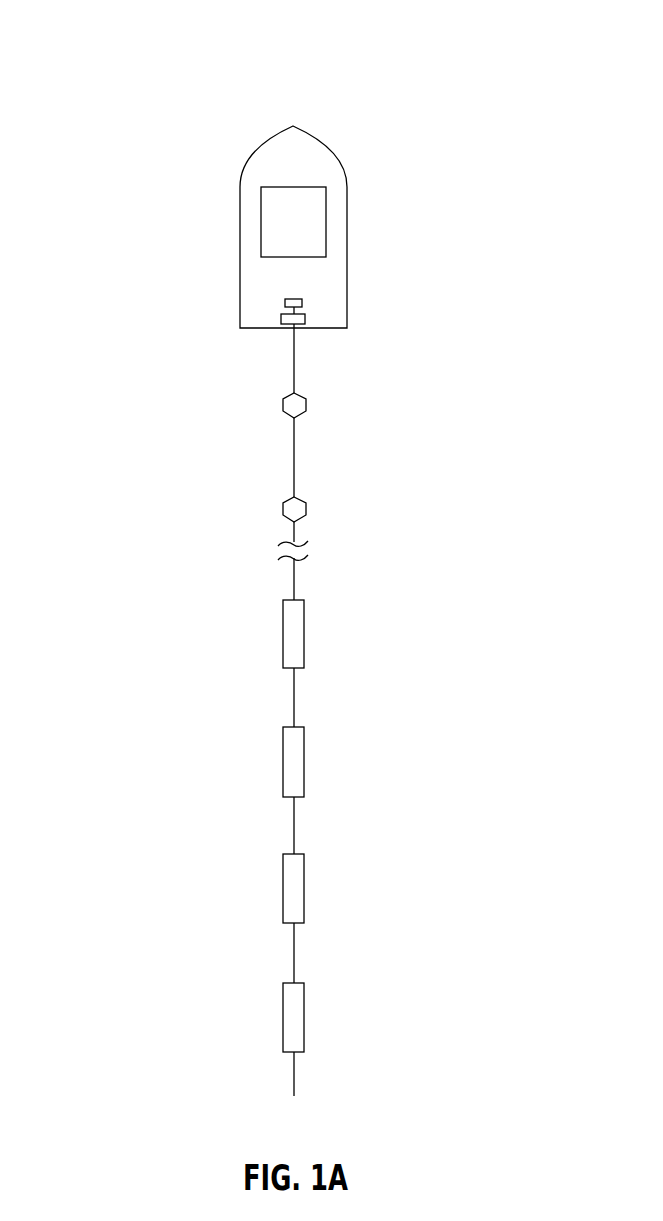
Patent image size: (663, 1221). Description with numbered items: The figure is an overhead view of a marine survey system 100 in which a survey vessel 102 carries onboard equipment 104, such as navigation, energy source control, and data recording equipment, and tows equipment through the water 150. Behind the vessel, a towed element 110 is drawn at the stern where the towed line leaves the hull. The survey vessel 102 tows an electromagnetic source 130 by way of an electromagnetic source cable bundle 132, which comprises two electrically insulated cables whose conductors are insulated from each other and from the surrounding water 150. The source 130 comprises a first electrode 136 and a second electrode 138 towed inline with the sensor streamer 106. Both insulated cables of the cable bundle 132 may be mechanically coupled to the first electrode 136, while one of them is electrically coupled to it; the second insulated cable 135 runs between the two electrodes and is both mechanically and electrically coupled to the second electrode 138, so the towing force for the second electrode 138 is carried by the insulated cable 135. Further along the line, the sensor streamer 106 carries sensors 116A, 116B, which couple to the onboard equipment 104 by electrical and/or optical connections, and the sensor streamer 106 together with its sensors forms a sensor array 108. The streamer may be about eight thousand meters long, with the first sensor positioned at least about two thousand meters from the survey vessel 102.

The marine survey system 100 is at (134, 80).
The survey vessel 102 is at (268, 146).
The onboard equipment 104 is at (312, 186).
The winch / towing equipment 110 is at (306, 319).
The electromagnetic source 130 is at (256, 455).
The electromagnetic source cable bundle 132 is at (296, 368).
The first electrode 136 is at (287, 396).
The second insulated cable 135 is at (296, 455).
The second electrode 138 is at (287, 499).
The sensor streamer 106 is at (299, 827).
The sensor 116A is at (282, 633).
The sensor 116B is at (282, 762).
The sensor array 108 is at (450, 780).
The water 150 is at (477, 928).